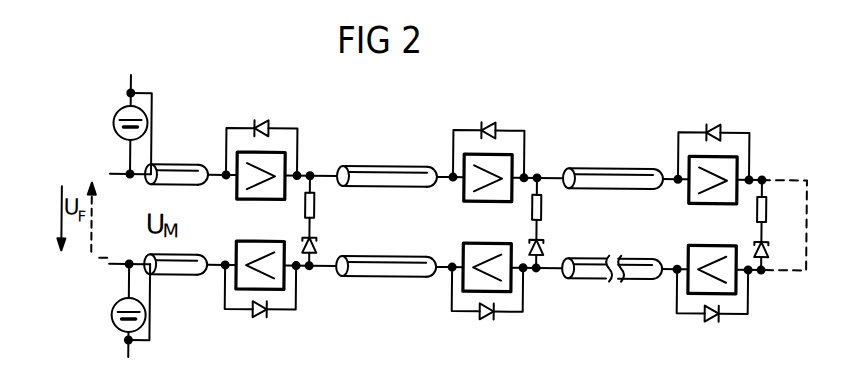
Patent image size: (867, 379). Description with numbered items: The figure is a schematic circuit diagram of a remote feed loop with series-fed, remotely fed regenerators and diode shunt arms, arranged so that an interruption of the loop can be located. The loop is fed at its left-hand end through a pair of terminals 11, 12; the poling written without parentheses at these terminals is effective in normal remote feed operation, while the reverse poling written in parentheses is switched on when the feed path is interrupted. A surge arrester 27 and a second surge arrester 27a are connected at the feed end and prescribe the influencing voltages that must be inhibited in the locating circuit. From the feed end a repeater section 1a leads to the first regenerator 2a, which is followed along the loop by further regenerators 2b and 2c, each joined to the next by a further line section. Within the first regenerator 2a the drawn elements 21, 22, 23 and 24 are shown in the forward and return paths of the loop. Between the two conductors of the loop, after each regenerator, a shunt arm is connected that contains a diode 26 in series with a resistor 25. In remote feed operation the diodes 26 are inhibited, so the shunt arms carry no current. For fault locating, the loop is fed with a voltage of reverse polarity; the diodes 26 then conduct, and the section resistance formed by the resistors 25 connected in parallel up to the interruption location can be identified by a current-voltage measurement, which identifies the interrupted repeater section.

The first input terminal 11 is at (107, 170).
The second input terminal 12 is at (105, 267).
The first line section (cable) 1a is at (163, 219).
The first repeater stage 2a is at (280, 220).
The second repeater stage 2b is at (500, 235).
The third repeater stage 2c is at (725, 235).
The bypass diode of forward amplifier 21 is at (262, 131).
The forward amplifier 22 is at (246, 186).
The return amplifier 23 is at (246, 259).
The bypass diode of return amplifier 24 is at (260, 309).
The resistor 25 is at (329, 207).
The diode 26 is at (328, 248).
The surge arrester 27 is at (115, 125).
The surge arrester 27a is at (112, 310).